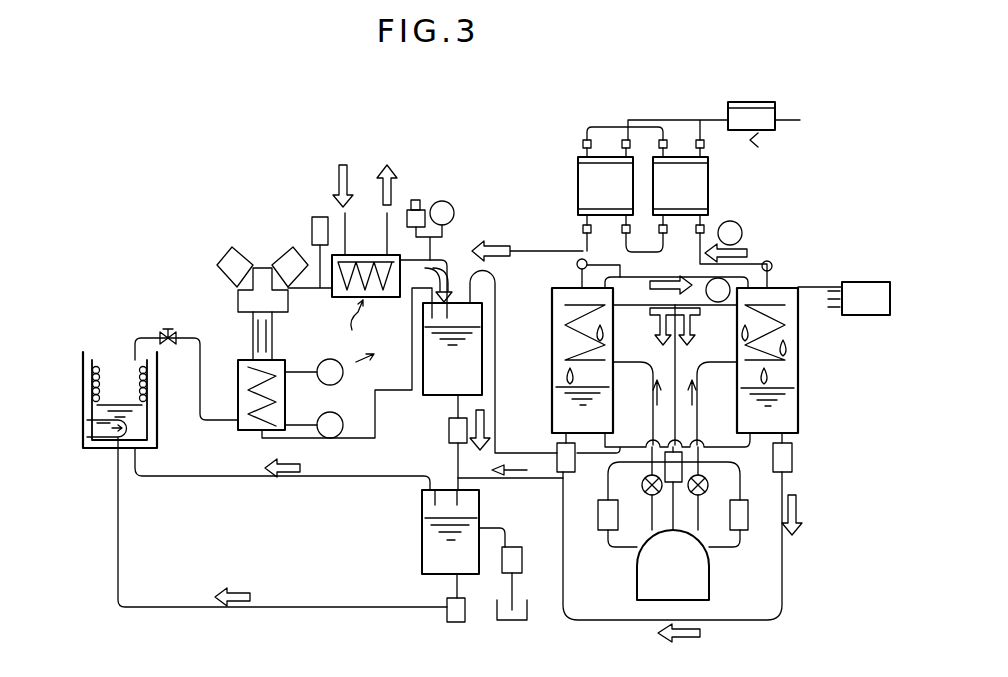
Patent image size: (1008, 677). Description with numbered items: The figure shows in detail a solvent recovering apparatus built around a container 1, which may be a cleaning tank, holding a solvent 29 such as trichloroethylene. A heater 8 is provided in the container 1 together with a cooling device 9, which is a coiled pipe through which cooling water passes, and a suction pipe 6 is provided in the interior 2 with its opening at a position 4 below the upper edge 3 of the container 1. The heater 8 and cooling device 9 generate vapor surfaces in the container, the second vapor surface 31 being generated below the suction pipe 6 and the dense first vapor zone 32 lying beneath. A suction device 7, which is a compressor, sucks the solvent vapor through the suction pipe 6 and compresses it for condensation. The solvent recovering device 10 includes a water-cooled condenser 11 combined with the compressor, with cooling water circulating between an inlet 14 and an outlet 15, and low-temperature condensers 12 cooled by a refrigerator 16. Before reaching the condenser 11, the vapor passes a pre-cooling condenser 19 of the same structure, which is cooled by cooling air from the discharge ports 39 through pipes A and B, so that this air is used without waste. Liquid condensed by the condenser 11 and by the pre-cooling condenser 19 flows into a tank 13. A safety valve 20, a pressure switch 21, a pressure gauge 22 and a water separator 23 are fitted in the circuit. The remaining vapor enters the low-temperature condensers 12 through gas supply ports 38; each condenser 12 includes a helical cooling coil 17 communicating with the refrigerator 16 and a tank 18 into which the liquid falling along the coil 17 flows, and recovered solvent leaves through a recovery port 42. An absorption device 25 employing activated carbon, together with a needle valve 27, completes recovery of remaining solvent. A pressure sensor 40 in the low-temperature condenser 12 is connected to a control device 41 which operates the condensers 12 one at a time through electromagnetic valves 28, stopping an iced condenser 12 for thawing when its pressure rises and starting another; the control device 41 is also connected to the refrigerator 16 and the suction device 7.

The container 1 is at (92, 372).
The interior 2 is at (110, 388).
The upper edge 3 is at (94, 366).
The position 4 is at (138, 366).
The suction pipe 6 is at (138, 346).
The suction device 7 is at (262, 270).
The heater 8 is at (108, 448).
The cooling device 9 is at (93, 396).
The solvent recovering device 10 is at (838, 362).
The water-cooled condenser 11 is at (363, 255).
The low-temperature condenser 12 is at (552, 312).
The tank 13 is at (428, 404).
The inlet 14 is at (340, 218).
The outlet 15 is at (388, 215).
The refrigerator 16 is at (710, 580).
The helical cooling coil 17 is at (565, 346).
The tank 18 is at (557, 398).
The pre-cooling condenser 19 is at (286, 398).
The safety valve 20 is at (312, 222).
The pressure switch 21 is at (420, 200).
The pressure gauge 22 is at (455, 208).
The water separator 23 is at (420, 520).
The absorption device 25 is at (578, 172).
The needle valve 27 is at (748, 102).
The electromagnetic valve 28 is at (449, 431).
The solvent 29 is at (96, 430).
The second vapor surface 31 is at (163, 605).
The first vapor zone 32 is at (303, 478).
The gas supply port 38 is at (613, 421).
The discharge port 39 is at (810, 263).
The pressure sensor 40 is at (766, 260).
The control device 41 is at (868, 282).
The recovery port 42 is at (550, 428).